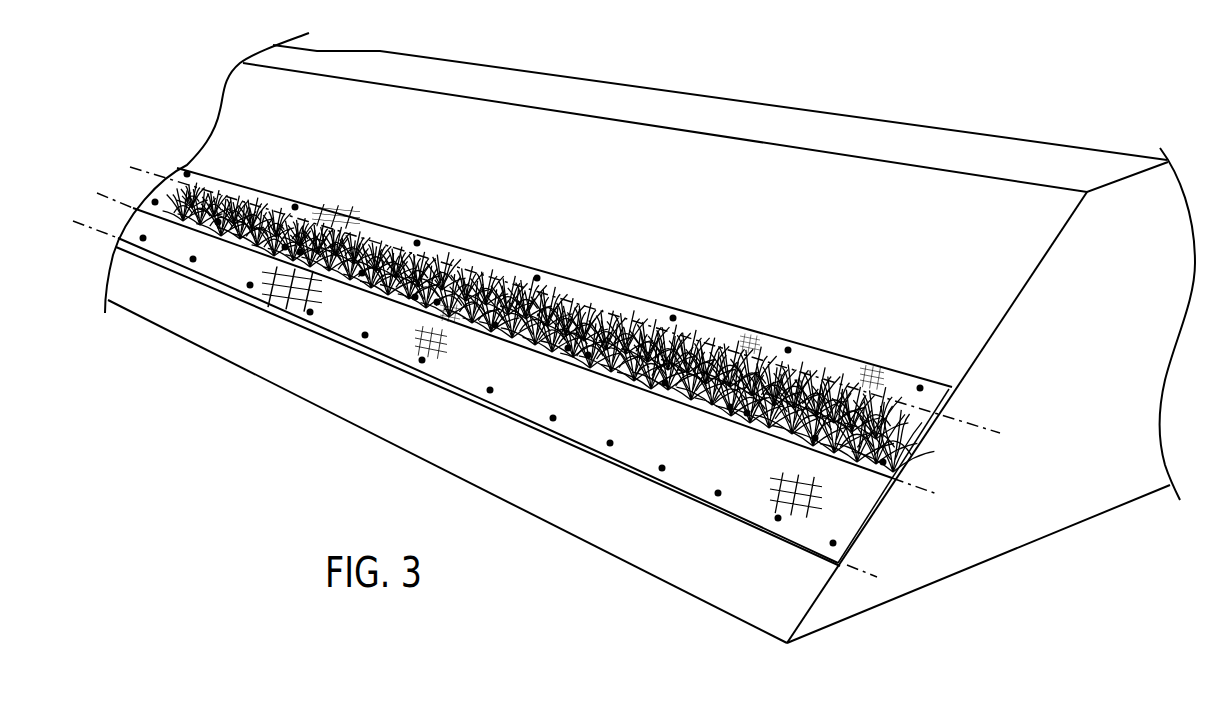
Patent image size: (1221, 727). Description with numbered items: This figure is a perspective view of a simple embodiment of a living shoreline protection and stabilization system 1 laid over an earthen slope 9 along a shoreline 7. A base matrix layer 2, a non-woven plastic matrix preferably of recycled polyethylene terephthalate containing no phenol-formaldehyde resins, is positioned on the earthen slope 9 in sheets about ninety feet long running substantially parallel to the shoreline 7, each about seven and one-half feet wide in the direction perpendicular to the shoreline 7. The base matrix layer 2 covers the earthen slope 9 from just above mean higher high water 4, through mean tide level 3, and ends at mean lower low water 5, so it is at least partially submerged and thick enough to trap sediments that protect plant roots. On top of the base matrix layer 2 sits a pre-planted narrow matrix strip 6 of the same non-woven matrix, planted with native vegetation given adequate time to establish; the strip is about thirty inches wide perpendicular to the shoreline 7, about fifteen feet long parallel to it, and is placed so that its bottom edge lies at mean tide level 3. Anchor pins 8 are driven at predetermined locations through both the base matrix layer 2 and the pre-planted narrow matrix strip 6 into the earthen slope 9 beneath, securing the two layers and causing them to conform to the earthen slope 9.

The living shoreline protection and stabilization system 1 is at (727, 333).
The base matrix layer 2 is at (335, 260).
The mean tide level 3 is at (927, 494).
The mean higher high water (MHHW) 4 is at (988, 431).
The mean lower low water (MLLW) 5 is at (862, 572).
The pre-planted narrow matrix strip 6 is at (353, 217).
The shoreline 7 is at (670, 405).
The anchor pins 8 is at (537, 278).
The earthen slope 9 is at (630, 130).